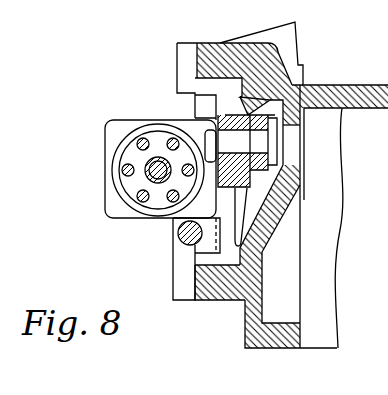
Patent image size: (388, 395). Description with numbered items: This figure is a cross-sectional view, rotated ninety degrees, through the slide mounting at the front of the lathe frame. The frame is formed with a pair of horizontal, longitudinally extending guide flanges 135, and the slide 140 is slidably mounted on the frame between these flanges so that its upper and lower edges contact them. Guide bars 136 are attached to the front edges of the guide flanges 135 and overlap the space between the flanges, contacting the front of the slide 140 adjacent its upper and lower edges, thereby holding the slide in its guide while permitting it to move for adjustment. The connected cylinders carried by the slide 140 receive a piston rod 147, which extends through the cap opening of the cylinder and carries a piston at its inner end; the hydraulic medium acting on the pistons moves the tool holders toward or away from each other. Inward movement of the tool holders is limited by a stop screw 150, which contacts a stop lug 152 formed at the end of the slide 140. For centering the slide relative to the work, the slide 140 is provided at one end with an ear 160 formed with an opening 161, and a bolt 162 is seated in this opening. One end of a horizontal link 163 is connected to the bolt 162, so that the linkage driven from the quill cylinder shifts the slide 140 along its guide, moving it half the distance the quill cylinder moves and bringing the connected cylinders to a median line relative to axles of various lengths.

The guide flanges 135 is at (234, 38).
The guide bars 136 is at (180, 43).
The slide 140 is at (231, 260).
The piston rod 147 is at (160, 160).
The stop screw 150 is at (178, 238).
The stop lugs 152 is at (173, 231).
The ear 160 is at (218, 118).
The opening 161 is at (305, 84).
The bolt 162 is at (262, 147).
The horizontal link 163 is at (303, 181).